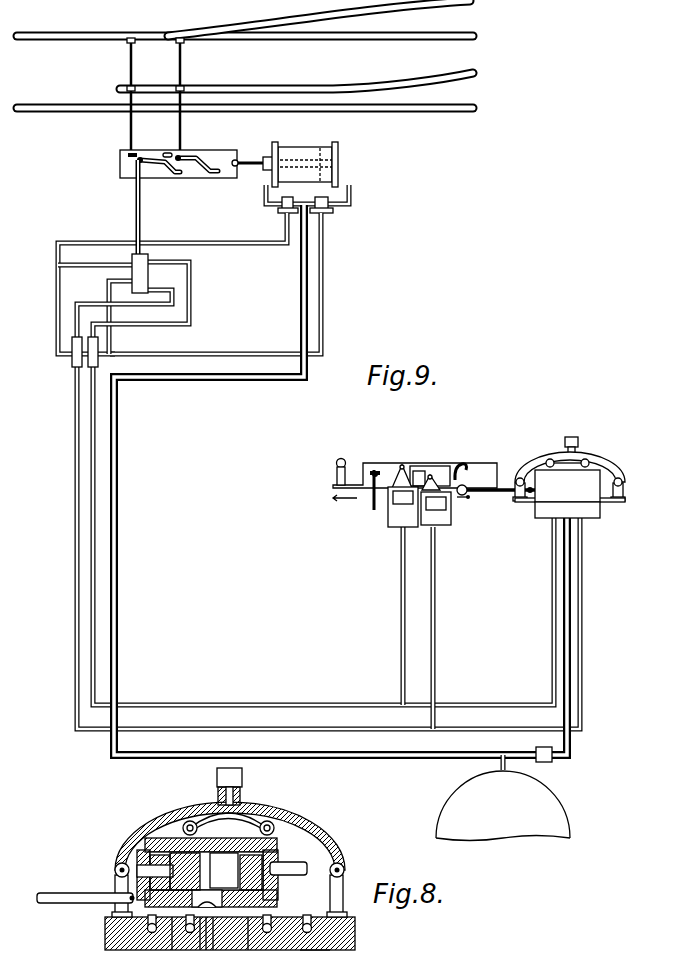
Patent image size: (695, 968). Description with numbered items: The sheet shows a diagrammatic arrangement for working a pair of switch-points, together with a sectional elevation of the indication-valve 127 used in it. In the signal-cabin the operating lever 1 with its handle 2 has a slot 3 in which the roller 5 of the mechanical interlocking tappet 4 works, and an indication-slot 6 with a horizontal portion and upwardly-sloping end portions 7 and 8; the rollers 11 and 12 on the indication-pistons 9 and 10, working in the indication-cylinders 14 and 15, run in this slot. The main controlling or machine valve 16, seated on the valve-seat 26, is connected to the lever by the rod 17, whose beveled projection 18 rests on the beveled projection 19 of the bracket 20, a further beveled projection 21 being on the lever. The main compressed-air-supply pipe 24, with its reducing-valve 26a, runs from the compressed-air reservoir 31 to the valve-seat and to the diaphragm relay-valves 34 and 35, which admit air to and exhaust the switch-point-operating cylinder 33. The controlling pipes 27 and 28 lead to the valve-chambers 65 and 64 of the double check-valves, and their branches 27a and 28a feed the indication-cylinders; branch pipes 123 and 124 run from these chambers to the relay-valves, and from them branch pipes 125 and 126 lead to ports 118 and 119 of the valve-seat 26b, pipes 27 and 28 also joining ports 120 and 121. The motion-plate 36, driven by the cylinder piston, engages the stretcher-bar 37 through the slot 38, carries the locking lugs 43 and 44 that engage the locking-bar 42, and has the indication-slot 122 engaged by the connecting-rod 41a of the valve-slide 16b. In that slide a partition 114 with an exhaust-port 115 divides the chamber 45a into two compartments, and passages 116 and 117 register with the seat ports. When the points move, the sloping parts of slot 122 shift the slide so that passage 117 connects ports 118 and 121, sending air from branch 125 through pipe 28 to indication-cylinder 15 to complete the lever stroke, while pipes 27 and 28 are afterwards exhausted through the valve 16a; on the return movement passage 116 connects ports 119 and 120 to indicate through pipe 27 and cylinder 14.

In FIG. 9, the operating lever 1 is at (490, 466).
In FIG. 9, the handle 2 is at (341, 458).
In FIG. 9, the slot 3 is at (376, 470).
In FIG. 9, the mechanical interlocking tappet 4 is at (372, 500).
In FIG. 9, the roller 5 is at (373, 472).
In FIG. 9, the indication-slot 6 is at (430, 472).
In FIG. 9, the upwardly-sloping end portion 7 is at (418, 472).
In FIG. 9, the upwardly-sloping end portion 8 is at (462, 464).
In FIG. 9, the indication-piston 9 is at (403, 498).
In FIG. 9, the indication-piston 10 is at (436, 503).
In FIG. 9, the roller 11 is at (401, 464).
In FIG. 9, the roller 12 is at (432, 474).
In FIG. 9, the indication-cylinder 14 is at (403, 507).
In FIG. 9, the indication-cylinder 15 is at (447, 522).
In FIG. 9, the main controlling or machine valve 16 is at (612, 497).
In FIG. 9, the valve 16a is at (567, 486).
In FIG. 8, the valve 16a is at (187, 871).
In FIG. 8, the valve-slide 16b is at (140, 841).
In FIG. 9, the rod 17 is at (501, 499).
In FIG. 8, the rod 17 is at (273, 872).
In FIG. 9, the projection 18 is at (467, 494).
In FIG. 9, the beveled projection 19 is at (469, 499).
In FIG. 9, the bracket 20 is at (458, 500).
In FIG. 9, the beveled projection 21 is at (487, 487).
In FIG. 9, the main compressed-air-supply pipe 24 is at (235, 378).
In FIG. 9, the valve-seat 26 is at (567, 510).
In FIG. 9, the reducing-valve 26a is at (548, 762).
In FIG. 8, the valve-seat 26b is at (355, 936).
In FIG. 9, the controlling pipe 27 is at (191, 303).
In FIG. 9, the branch pipe 27a is at (400, 600).
In FIG. 9, the controlling pipe 28 is at (160, 305).
In FIG. 9, the branch pipe 28a is at (436, 602).
In FIG. 9, the compressed-air reservoir 31 is at (503, 798).
In FIG. 9, the switch-point-operating cylinder 33 is at (305, 144).
In FIG. 9, the diaphragm relay-valve 34 is at (280, 211).
In FIG. 9, the diaphragm relay-valve 35 is at (333, 211).
In FIG. 9, the motion-plate 36 is at (226, 155).
In FIG. 9, the stretcher-bar 37 is at (181, 68).
In FIG. 9, the slot 38 is at (197, 158).
In FIG. 9, the connecting-rod 41a is at (136, 200).
In FIG. 8, the connecting-rod 41a is at (82, 900).
In FIG. 9, the locking-bar 42 is at (134, 68).
In FIG. 9, the locking lug 43 is at (127, 155).
In FIG. 9, the locking lug 44 is at (166, 152).
In FIG. 8, the chamber 45a is at (212, 848).
In FIG. 9, the valve-chamber 64 is at (72, 361).
In FIG. 9, the valve-chamber 65 is at (98, 361).
In FIG. 8, the partition 114 is at (224, 870).
In FIG. 8, the exhaust-port 115 is at (222, 942).
In FIG. 8, the air passage 116 is at (177, 941).
In FIG. 8, the air passage 117 is at (256, 941).
In FIG. 8, the port 118 is at (292, 941).
In FIG. 8, the port 119 is at (201, 942).
In FIG. 8, the port 120 is at (150, 933).
In FIG. 8, the port 121 is at (310, 933).
In FIG. 9, the indication-slot 122 is at (163, 166).
In FIG. 9, the branch pipe 123 is at (323, 248).
In FIG. 9, the branch pipe 124 is at (252, 245).
In FIG. 9, the branch pipe 125 is at (112, 339).
In FIG. 9, the branch pipe 126 is at (95, 258).
In FIG. 9, the indication-valve 127 is at (148, 274).
In FIG. 8, the indication-valve 127 is at (272, 852).